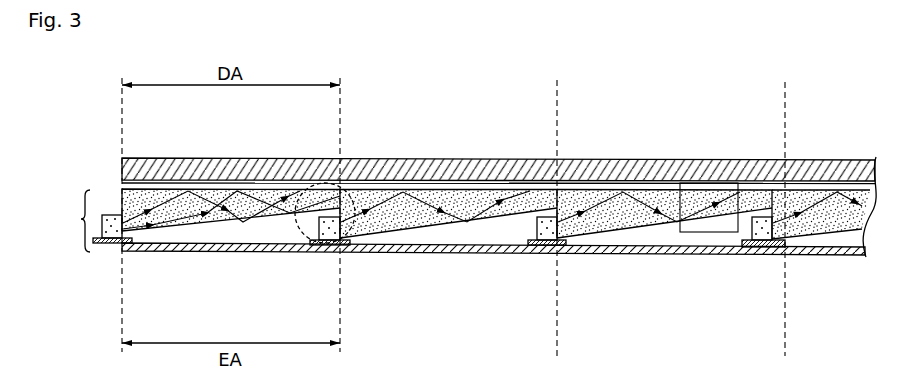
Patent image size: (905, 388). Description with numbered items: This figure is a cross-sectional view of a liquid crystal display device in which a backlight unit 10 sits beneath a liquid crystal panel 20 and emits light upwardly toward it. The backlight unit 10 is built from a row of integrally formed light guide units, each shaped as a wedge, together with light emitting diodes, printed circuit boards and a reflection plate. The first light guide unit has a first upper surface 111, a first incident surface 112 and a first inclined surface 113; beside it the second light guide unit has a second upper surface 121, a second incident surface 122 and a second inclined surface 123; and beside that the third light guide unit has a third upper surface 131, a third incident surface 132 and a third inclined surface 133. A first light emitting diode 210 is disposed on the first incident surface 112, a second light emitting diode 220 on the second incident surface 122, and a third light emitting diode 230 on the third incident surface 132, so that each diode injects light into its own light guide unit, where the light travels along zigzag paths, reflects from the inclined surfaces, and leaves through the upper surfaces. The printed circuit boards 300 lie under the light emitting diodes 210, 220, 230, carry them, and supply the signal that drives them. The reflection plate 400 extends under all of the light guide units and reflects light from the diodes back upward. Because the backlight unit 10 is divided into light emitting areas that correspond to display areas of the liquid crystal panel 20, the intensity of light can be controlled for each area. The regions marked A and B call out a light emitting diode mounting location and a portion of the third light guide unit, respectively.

The backlight unit 10 is at (50, 221).
The liquid crystal panel 20 is at (166, 168).
The first upper surface 111 is at (220, 189).
The first incident surface 112 is at (140, 232).
The first inclined surface 113 is at (232, 223).
The second upper surface 121 is at (437, 190).
The second incident surface 122 is at (350, 230).
The second inclined surface 123 is at (448, 220).
The third upper surface 131 is at (652, 190).
The third incident surface 132 is at (581, 240).
The third inclined surface 133 is at (662, 225).
The first light emitting diode 210 is at (105, 215).
The second light emitting diode 220 is at (318, 230).
The third light emitting diode 230 is at (537, 228).
The printed circuit board 300 is at (105, 245).
The reflection plate 400 is at (197, 248).
The region A is at (327, 246).
The region B is at (708, 233).